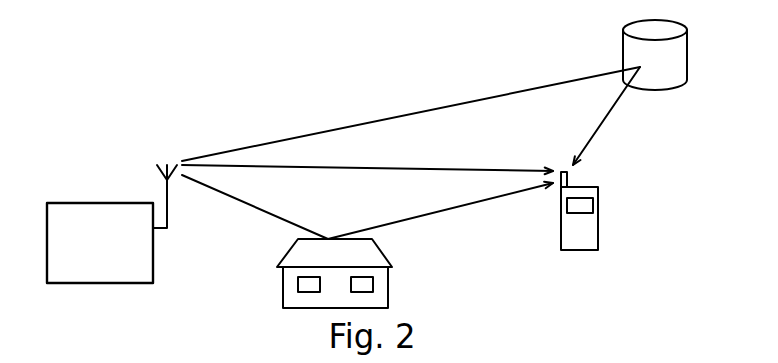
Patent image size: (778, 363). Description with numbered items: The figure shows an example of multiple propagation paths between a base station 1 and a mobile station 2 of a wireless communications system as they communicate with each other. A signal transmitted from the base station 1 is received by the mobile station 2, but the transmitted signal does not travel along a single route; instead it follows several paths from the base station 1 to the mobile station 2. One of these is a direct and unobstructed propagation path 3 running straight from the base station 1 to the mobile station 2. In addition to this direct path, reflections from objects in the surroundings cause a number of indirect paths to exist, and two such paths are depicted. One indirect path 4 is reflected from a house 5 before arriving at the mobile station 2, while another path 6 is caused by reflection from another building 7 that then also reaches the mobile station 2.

The base station 1 is at (103, 203).
The mobile station 2 is at (598, 228).
The direct propagation path 3 is at (428, 168).
The indirect path 4 is at (437, 213).
The house 5 is at (388, 275).
The indirect path 6 is at (482, 100).
The building 7 is at (650, 93).